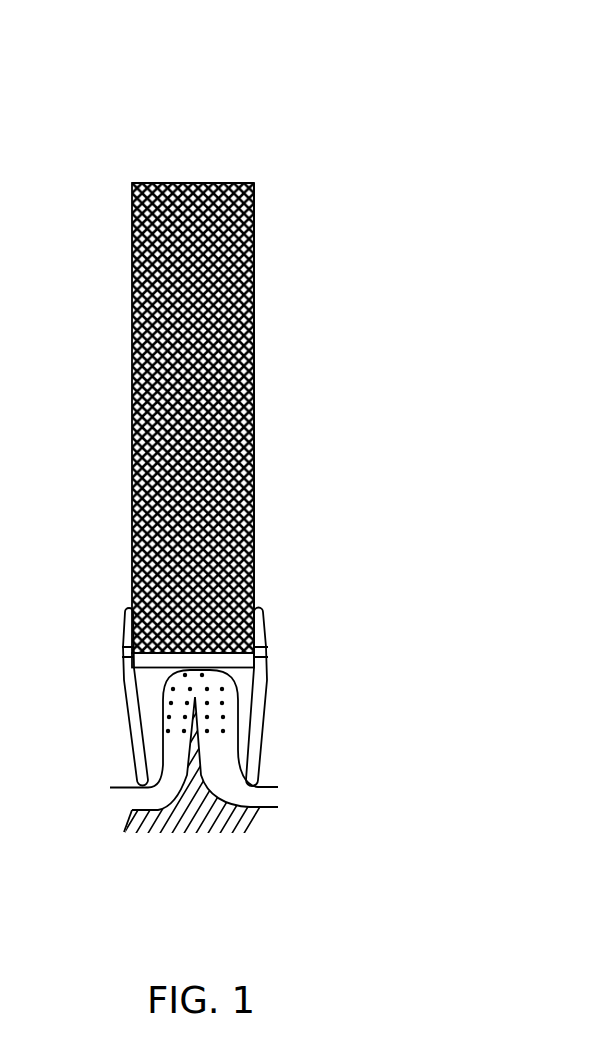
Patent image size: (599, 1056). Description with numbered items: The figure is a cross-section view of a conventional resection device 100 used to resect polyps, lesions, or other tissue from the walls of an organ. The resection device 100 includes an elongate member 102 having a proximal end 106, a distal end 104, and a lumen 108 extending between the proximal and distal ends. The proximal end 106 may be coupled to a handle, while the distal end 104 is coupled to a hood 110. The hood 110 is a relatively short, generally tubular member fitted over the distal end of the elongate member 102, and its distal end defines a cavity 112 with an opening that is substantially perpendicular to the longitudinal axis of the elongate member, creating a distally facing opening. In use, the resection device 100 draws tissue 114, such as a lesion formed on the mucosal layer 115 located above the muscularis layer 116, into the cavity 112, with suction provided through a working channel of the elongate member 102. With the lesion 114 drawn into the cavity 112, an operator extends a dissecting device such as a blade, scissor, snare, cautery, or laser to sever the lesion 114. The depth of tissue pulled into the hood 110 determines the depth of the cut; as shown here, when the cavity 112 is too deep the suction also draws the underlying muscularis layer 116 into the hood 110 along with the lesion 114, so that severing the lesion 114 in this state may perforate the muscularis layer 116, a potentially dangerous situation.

The resection device 100 is at (441, 72).
The elongate member 102 is at (265, 466).
The distal end 104 is at (250, 655).
The proximal end 106 is at (255, 228).
The lumen 108 is at (237, 183).
The hood 110 is at (256, 732).
The cavity 112 is at (153, 718).
The tissue 114 is at (172, 705).
The mucosal layer 115 is at (270, 787).
The muscularis layer 116 is at (124, 830).